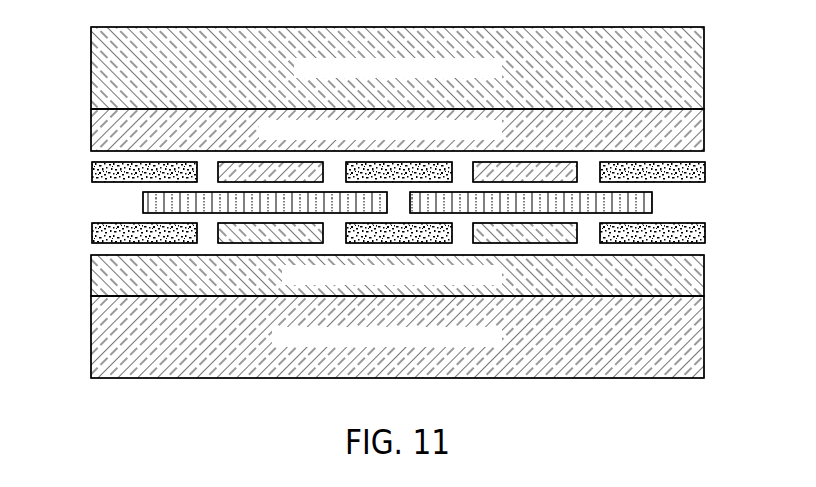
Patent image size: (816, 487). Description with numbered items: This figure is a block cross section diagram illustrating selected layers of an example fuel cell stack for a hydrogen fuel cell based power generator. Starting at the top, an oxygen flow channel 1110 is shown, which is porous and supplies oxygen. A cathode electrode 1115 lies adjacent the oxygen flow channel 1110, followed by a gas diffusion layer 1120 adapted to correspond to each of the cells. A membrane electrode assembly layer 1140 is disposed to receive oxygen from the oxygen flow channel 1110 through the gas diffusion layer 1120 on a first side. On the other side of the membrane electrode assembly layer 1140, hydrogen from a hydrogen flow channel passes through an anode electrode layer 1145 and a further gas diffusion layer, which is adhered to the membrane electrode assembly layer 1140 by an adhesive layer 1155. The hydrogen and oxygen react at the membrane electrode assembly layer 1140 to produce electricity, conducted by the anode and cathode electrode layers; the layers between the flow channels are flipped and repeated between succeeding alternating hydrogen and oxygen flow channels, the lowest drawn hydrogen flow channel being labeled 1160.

The oxygen flow channel 1110 is at (706, 66).
The cathode electrode 1115 is at (706, 128).
The gas diffusion layer 1120 is at (525, 163).
The membrane electrode assembly layer 1140 is at (654, 203).
The anode electrode layer 1145 is at (90, 279).
The adhesive layer 1155 is at (707, 233).
The hydrogen flow channel 1160 is at (90, 339).